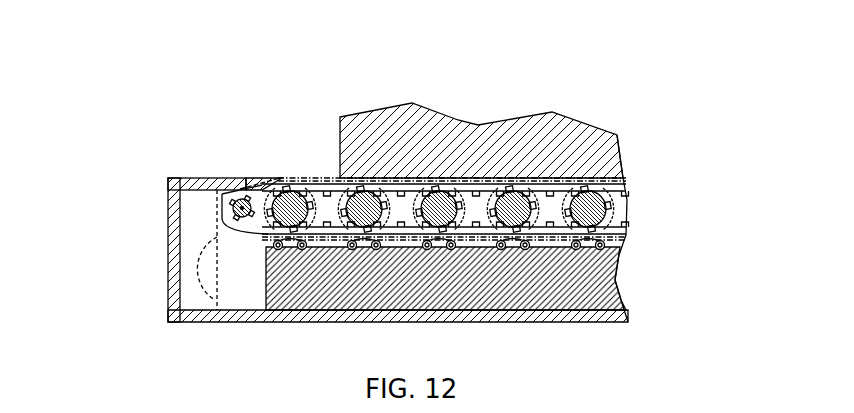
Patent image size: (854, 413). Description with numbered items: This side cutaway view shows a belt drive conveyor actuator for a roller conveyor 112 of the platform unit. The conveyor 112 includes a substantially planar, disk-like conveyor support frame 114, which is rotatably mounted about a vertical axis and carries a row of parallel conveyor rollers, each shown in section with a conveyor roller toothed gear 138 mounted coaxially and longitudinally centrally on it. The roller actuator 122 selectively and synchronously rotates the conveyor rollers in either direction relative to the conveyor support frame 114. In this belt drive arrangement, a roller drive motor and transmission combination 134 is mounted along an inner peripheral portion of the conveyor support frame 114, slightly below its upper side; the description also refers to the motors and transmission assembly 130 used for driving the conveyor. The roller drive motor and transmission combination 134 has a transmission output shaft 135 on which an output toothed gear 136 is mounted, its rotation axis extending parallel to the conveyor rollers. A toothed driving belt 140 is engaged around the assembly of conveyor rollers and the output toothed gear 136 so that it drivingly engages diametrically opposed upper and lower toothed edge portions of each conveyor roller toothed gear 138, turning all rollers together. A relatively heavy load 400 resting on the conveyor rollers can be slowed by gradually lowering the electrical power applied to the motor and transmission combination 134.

The conveyor 112 is at (495, 138).
The conveyor support frame 114 is at (178, 293).
The roller actuator 122 is at (270, 178).
The motors and transmission assembly 130 is at (233, 253).
The roller drive motor and transmission combination 134 is at (222, 223).
The transmission output shaft 135 is at (242, 212).
The output toothed gear 136 is at (229, 199).
The conveyor roller toothed gear 138 is at (610, 214).
The driving belt 140 is at (315, 180).
The load 400 is at (603, 162).